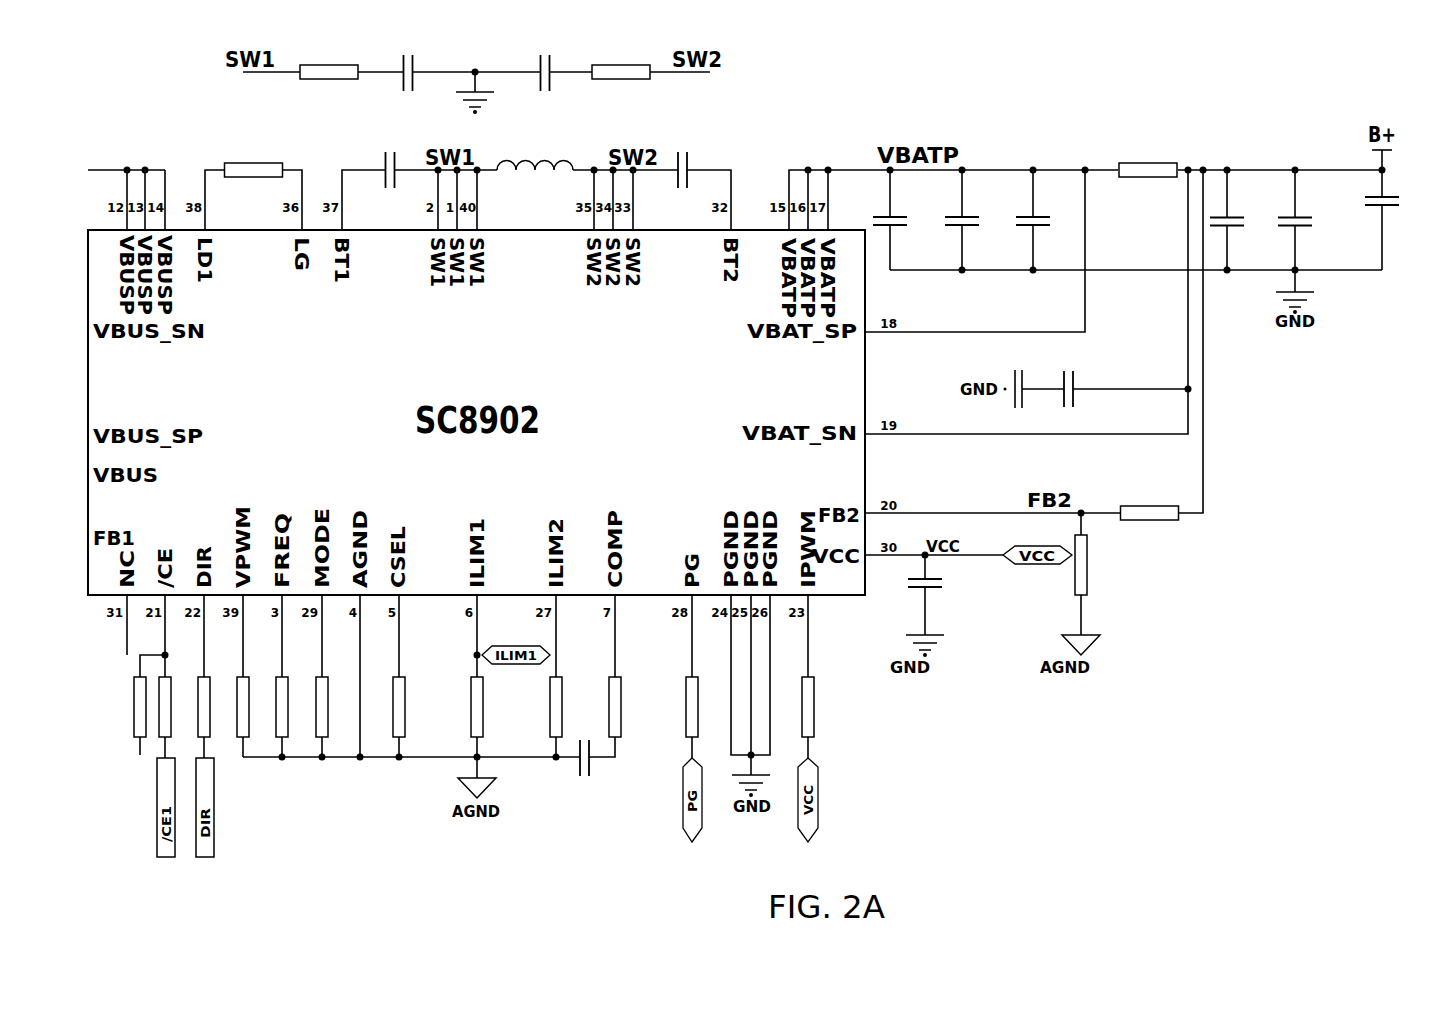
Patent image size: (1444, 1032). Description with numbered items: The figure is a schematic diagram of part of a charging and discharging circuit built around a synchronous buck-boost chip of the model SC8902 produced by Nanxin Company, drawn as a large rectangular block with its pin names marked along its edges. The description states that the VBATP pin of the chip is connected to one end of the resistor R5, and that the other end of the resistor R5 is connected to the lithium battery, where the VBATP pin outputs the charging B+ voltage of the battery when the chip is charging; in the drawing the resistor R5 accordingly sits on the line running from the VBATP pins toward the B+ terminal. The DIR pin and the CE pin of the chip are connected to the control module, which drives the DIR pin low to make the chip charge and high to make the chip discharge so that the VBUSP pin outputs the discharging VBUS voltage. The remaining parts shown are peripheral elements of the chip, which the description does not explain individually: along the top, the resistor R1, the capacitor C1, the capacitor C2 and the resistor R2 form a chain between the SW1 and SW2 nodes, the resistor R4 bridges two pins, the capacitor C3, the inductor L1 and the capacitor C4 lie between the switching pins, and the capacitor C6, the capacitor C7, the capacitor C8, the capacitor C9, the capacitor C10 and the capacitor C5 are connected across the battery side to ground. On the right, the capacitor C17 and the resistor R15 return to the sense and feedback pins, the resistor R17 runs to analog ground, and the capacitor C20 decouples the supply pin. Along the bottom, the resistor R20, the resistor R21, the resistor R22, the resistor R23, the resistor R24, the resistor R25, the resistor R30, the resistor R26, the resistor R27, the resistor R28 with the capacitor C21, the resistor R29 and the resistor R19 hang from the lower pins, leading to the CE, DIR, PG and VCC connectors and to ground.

The resistor R1 is at (327, 59).
The resistor R2 is at (621, 59).
The resistor R4 is at (252, 156).
The resistor R5 is at (1147, 156).
The resistor R15 is at (1148, 502).
The resistor R17 is at (1103, 574).
The resistor R19 is at (832, 717).
The resistor R20 is at (117, 716).
The resistor R21 is at (183, 704).
The resistor R22 is at (222, 704).
The resistor R23 is at (261, 704).
The resistor R24 is at (300, 704).
The resistor R25 is at (340, 704).
The resistor R26 is at (497, 717).
The resistor R27 is at (575, 717).
The resistor R28 is at (635, 707).
The resistor R29 is at (713, 717).
The resistor R30 is at (421, 717).
The capacitor C1 is at (410, 58).
The capacitor C2 is at (548, 58).
The capacitor C3 is at (390, 157).
The capacitor C4 is at (683, 157).
The capacitor C5 is at (1400, 210).
The capacitor C6 is at (906, 220).
The capacitor C7 is at (978, 220).
The capacitor C8 is at (1049, 220).
The capacitor C9 is at (1242, 220).
The capacitor C10 is at (1317, 220).
The capacitor C17 is at (1096, 377).
The capacitor C20 is at (947, 595).
The capacitor C21 is at (589, 746).
The inductor L1 is at (535, 148).